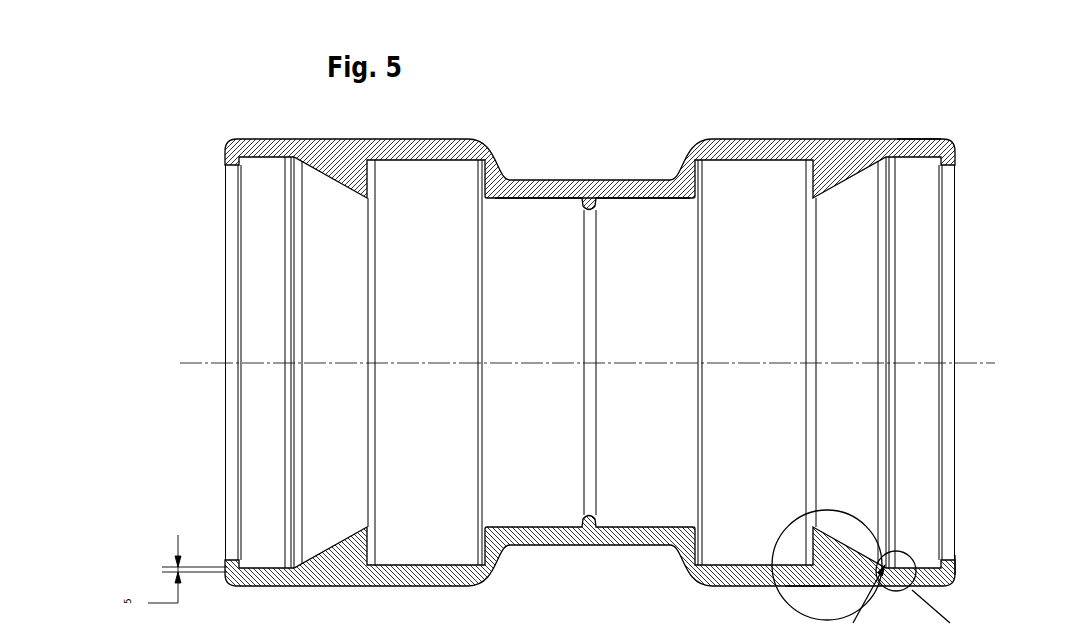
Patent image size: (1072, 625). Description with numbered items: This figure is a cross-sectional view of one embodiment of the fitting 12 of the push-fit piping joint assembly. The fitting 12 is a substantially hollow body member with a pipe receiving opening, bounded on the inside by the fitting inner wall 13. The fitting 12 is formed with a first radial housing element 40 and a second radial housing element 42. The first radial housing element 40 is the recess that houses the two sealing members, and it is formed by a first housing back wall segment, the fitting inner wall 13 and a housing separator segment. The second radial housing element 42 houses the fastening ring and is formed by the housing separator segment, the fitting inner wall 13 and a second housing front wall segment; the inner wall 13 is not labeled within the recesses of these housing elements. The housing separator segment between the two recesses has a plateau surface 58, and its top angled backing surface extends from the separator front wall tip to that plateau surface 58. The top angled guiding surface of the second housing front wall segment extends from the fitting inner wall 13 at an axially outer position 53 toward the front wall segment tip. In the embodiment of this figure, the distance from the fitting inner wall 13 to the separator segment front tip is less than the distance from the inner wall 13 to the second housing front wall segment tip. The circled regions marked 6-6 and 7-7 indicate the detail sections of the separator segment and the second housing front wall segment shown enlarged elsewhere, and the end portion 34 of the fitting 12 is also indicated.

The fitting 12 is at (592, 180).
The fitting inner wall 13 is at (653, 200).
The first radial housing element 40 is at (750, 213).
The second radial housing element 42 is at (920, 148).
The end portion 34 is at (953, 160).
The axially outer position 53 is at (1007, 589).
The plateau surface 58 is at (785, 602).
The detail section 6-6 is at (814, 565).
The detail section 7-7 is at (912, 551).